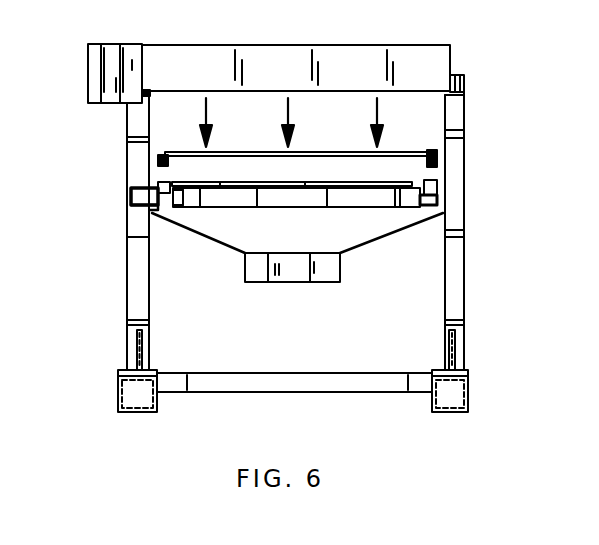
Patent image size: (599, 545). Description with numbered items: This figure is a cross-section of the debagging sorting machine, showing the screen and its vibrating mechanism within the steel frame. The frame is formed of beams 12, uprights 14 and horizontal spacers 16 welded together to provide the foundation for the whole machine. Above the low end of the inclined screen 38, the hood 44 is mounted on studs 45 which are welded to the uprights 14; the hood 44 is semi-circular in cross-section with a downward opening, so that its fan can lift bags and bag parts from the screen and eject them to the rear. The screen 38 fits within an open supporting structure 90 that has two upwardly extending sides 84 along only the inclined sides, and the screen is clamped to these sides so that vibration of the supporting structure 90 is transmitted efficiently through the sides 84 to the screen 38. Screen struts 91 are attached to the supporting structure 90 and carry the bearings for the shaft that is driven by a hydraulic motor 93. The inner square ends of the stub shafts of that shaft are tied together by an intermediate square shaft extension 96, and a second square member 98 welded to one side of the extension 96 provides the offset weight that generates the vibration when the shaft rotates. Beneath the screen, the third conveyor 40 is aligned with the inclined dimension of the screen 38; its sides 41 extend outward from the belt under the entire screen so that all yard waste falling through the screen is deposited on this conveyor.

The beams 12 is at (118, 382).
The uprights 14 is at (135, 262).
The horizontal spacers 16 is at (272, 374).
The inclined screen 38 is at (303, 152).
The third conveyor 40 is at (295, 283).
The sides 41 is at (220, 247).
The hood 44 is at (338, 53).
The studs 45 is at (463, 80).
The upwardly extending sides 84 is at (165, 160).
The supporting structure 90 is at (172, 183).
The screen struts 91 is at (157, 208).
The hydraulic motor 93 is at (130, 192).
The square shaft extension 96 is at (276, 200).
The second square member 98 is at (310, 182).